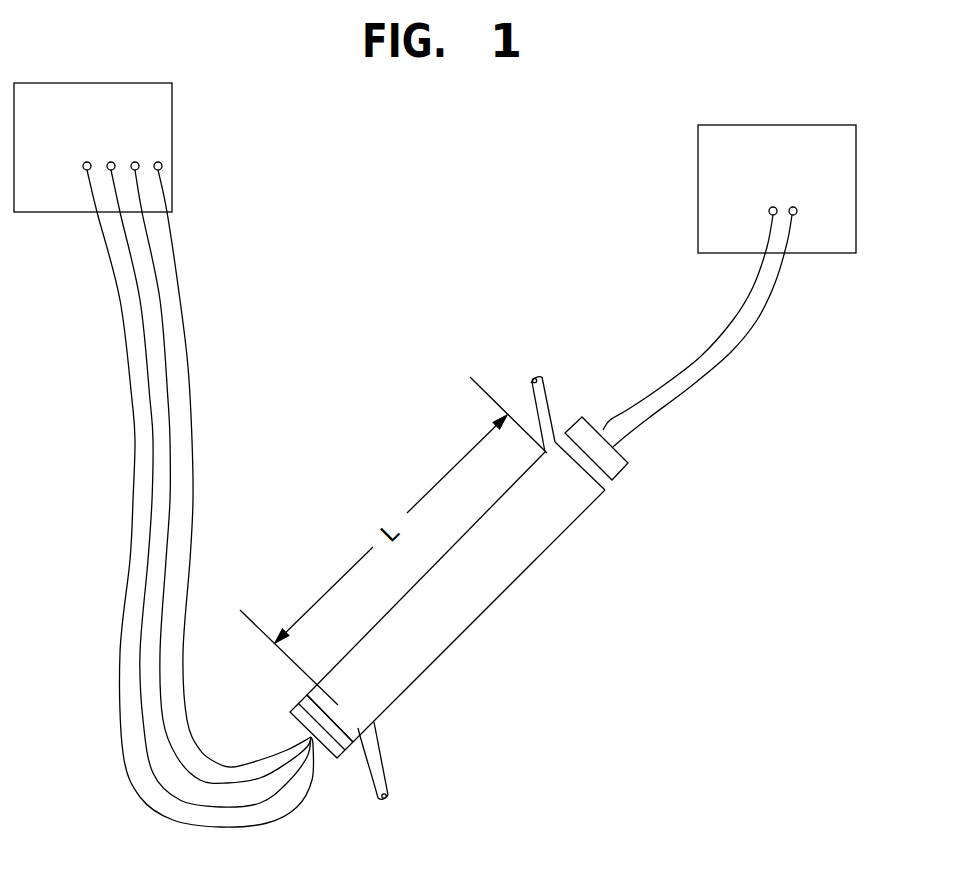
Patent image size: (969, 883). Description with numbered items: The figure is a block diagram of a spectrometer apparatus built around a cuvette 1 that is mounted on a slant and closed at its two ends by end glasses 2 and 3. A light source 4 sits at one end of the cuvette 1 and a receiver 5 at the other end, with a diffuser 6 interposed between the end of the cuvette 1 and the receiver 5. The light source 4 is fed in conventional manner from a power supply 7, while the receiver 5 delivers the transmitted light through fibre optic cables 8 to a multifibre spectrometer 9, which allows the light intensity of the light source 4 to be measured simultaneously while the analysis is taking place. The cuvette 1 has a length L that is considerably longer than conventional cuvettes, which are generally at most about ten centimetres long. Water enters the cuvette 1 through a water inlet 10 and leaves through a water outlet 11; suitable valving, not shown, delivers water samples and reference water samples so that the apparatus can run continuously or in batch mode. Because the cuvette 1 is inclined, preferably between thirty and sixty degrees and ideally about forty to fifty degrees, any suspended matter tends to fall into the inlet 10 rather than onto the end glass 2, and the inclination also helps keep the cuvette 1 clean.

The cuvette 1 is at (492, 587).
The end glass 2 is at (335, 732).
The end glass 3 is at (578, 468).
The light source 4 is at (615, 467).
The receiver 5 is at (325, 760).
The diffuser 6 is at (332, 718).
The power supply 7 is at (702, 172).
The fibre optic cables 8 is at (132, 535).
The spectrometer 9 is at (160, 128).
The water inlet 10 is at (385, 782).
The water outlet 11 is at (545, 403).